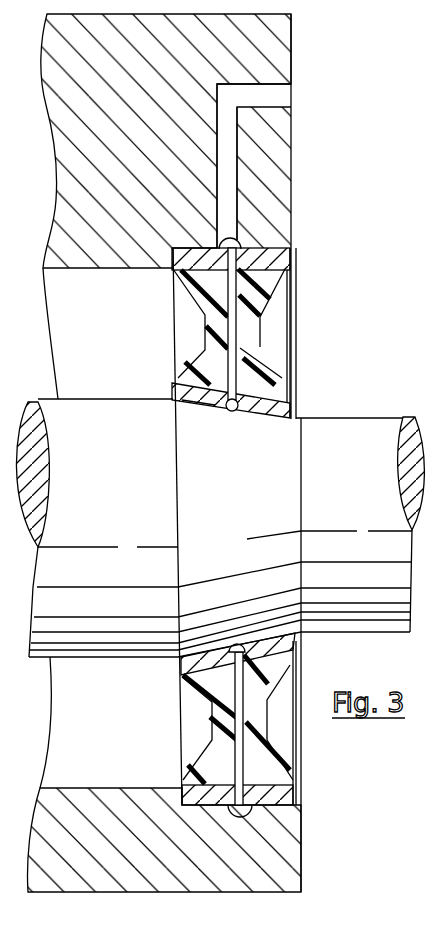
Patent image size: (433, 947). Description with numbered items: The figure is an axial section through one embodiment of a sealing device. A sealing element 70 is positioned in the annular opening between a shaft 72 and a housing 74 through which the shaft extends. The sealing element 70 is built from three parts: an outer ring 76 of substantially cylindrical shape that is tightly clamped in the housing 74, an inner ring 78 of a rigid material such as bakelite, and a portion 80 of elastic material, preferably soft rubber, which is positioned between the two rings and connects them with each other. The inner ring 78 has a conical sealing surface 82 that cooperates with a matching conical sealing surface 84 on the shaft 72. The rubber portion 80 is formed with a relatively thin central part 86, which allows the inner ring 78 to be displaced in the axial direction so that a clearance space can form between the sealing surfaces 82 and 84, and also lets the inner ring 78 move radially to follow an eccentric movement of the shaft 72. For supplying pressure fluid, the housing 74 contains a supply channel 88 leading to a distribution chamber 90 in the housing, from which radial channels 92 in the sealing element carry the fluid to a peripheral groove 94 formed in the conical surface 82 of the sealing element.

The sealing element 70 is at (235, 516).
The shaft 72 is at (432, 602).
The housing 74 is at (289, 195).
The outer ring 76 is at (279, 261).
The inner ring 78 is at (284, 402).
The portion of elastic material 80 is at (261, 298).
The conical sealing surface 82 is at (207, 400).
The conical sealing surface 84 is at (233, 556).
The thin central part 86 is at (207, 348).
The supply channel 88 is at (229, 140).
The distribution chamber 90 is at (224, 236).
The radial channels 92 is at (262, 362).
The peripheral groove 94 is at (236, 410).